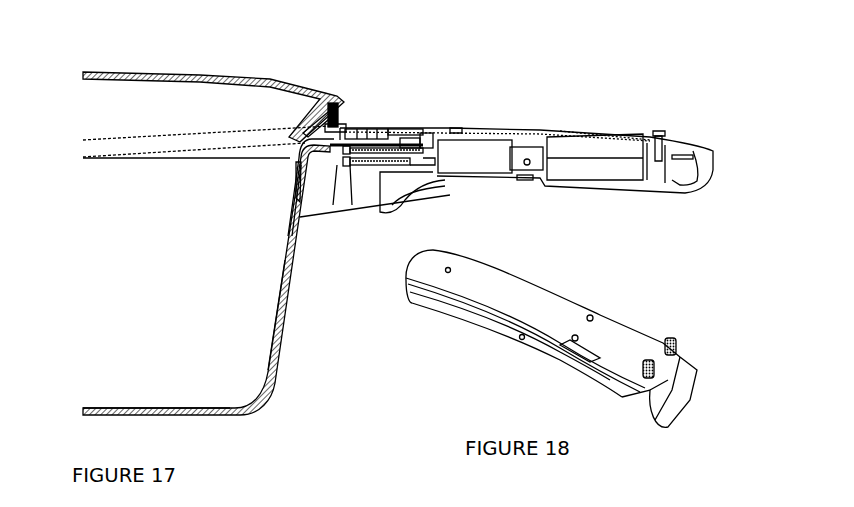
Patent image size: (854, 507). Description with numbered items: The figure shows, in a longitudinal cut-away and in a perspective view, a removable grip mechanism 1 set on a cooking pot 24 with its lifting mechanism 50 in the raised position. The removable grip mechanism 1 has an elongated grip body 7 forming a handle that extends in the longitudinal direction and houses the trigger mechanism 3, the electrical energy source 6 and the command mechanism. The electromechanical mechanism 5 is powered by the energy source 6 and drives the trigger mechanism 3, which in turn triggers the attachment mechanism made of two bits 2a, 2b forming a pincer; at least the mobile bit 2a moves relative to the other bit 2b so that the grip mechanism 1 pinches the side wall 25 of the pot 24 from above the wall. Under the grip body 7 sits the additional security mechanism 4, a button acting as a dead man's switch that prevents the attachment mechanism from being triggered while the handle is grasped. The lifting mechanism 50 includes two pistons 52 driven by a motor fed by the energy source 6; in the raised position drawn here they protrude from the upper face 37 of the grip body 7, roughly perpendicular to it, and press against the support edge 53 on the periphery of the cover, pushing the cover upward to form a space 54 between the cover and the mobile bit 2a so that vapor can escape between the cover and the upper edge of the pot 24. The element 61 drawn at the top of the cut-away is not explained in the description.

In FIG. 17, the device 1 is at (520, 105).
In FIG. 18, the device 1 is at (505, 352).
In FIG. 17, the first wall portion 2a is at (295, 200).
In FIG. 18, the first wall portion 2a is at (698, 375).
In FIG. 17, the second wall portion 2b is at (305, 222).
In FIG. 17, the fastening assembly 3 is at (407, 122).
In FIG. 17, the bracket 4 is at (398, 198).
In FIG. 17, the housing 5 is at (470, 168).
In FIG. 17, the cover plate 6 is at (617, 175).
In FIG. 17, the end cap 7 is at (650, 190).
In FIG. 18, the end cap 7 is at (440, 308).
In FIG. 17, the base panel 24 is at (145, 392).
In FIG. 17, the upright panel 25 is at (273, 367).
In FIG. 17, the cover 37 is at (602, 120).
In FIG. 18, the cover 37 is at (545, 305).
In FIG. 17, the seal 50 is at (344, 92).
In FIG. 18, the seal 50 is at (660, 330).
In FIG. 17, the seal block 52 is at (340, 110).
In FIG. 18, the seal block 52 is at (680, 343).
In FIG. 17, the clip 53 is at (333, 94).
In FIG. 17, the rod 54 is at (290, 151).
In FIG. 17, the upper panel 61 is at (157, 73).